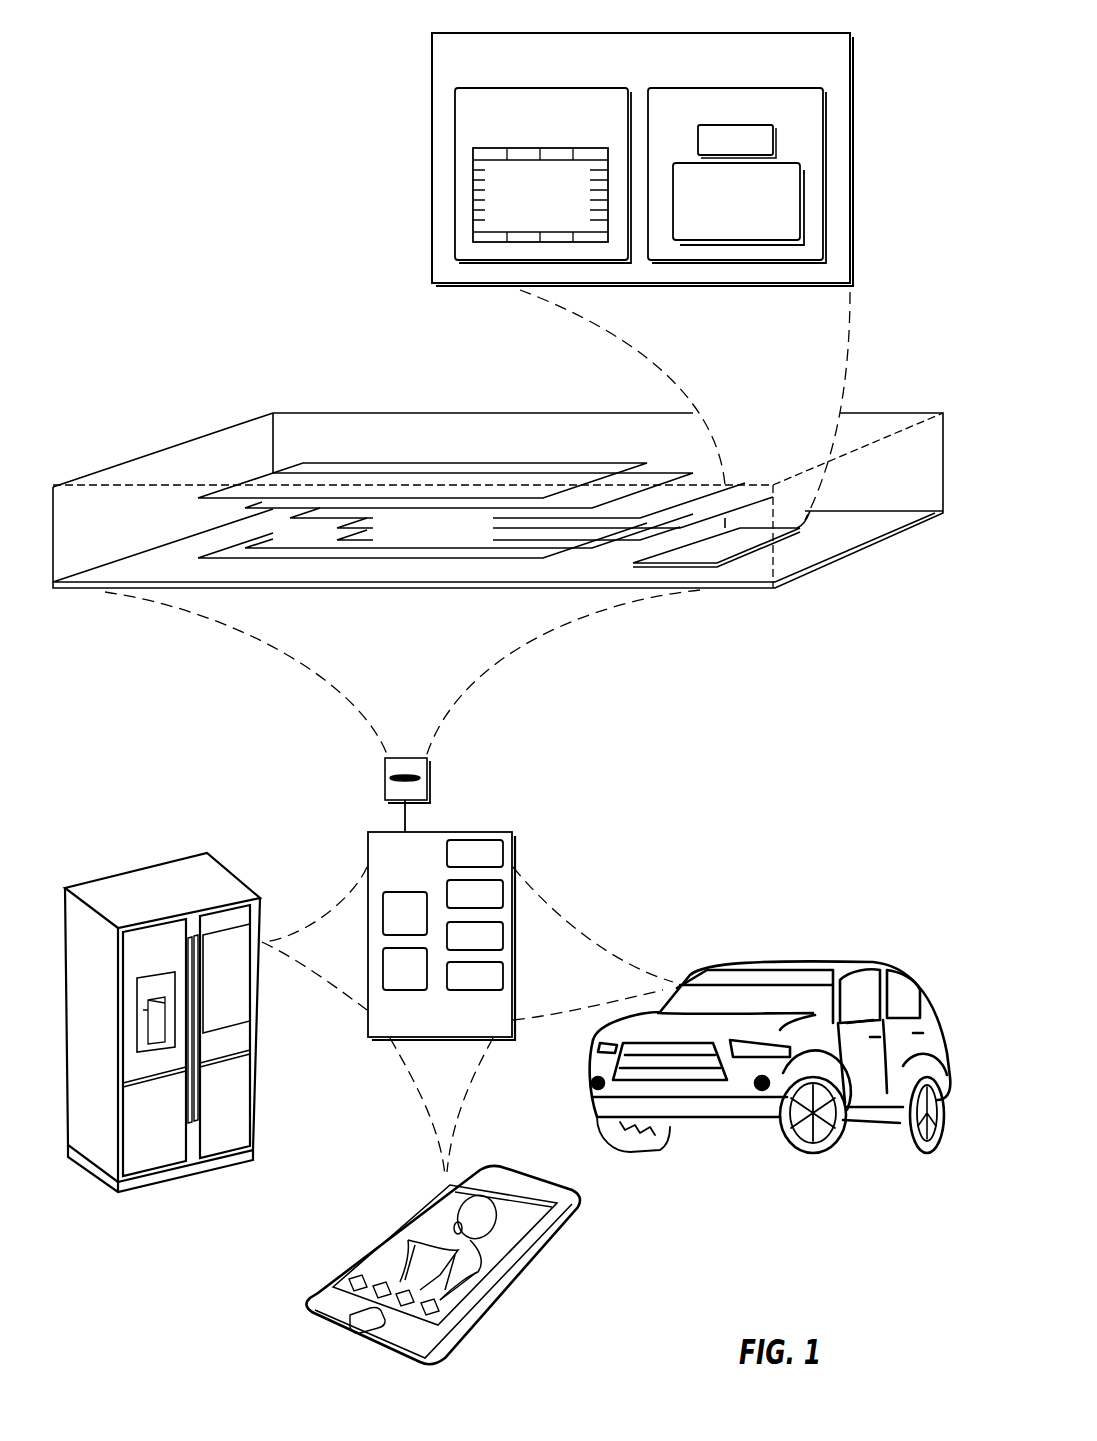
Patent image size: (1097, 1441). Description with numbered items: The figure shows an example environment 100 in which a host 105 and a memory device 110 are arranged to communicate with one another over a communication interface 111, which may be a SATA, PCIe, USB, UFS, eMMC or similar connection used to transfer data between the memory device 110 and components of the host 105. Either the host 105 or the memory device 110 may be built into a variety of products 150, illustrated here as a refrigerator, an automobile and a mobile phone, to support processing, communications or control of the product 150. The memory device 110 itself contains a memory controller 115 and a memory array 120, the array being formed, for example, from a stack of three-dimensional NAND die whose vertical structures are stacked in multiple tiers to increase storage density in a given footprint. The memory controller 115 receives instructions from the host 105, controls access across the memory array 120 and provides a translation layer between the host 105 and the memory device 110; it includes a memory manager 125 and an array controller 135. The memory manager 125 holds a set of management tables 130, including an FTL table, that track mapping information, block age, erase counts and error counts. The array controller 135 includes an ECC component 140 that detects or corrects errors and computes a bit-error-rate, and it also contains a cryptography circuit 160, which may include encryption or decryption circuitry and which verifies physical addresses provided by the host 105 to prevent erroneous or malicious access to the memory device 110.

The environment 100 is at (838, 26).
The host 105 is at (368, 847).
The memory device 110 is at (210, 435).
The communication interface 111 is at (407, 820).
The memory controller 115 is at (433, 40).
The memory array 120 is at (497, 461).
The memory manager 125 is at (455, 125).
The management tables 130 is at (473, 192).
The array controller 135 is at (822, 205).
The ECC component 140 is at (745, 78).
The product 150 is at (155, 865).
The cryptography circuit 160 is at (793, 212).